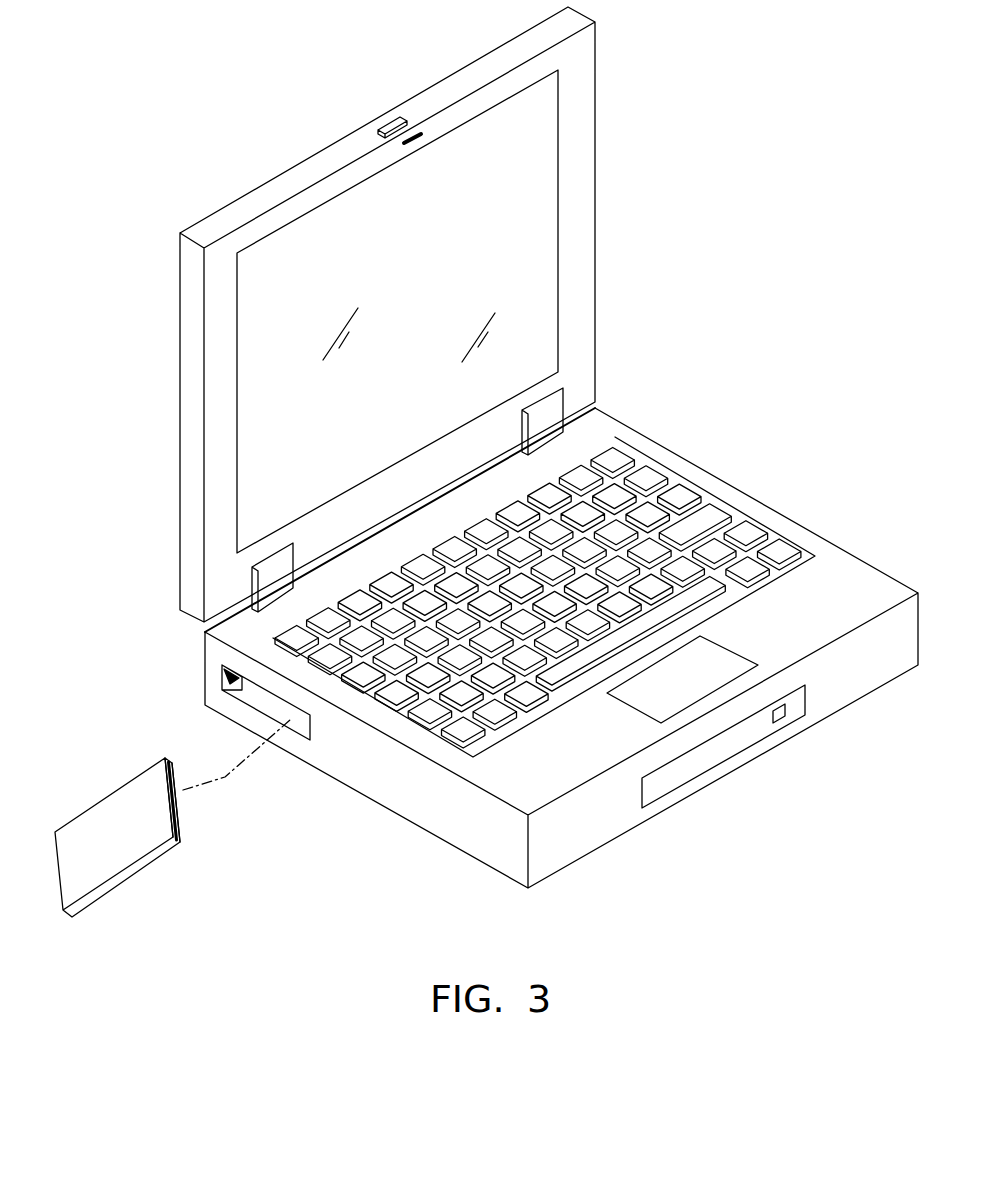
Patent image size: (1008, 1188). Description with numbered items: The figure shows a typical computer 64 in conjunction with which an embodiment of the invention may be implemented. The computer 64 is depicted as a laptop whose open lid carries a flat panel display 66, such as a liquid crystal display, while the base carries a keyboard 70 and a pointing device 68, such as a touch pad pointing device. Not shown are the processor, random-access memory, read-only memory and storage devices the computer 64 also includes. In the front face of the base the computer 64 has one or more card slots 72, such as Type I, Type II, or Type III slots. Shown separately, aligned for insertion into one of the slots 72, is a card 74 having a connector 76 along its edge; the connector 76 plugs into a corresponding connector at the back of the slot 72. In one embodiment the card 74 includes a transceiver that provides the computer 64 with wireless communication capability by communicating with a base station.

The computer 64 is at (518, 447).
The flat panel display 66 is at (253, 343).
The pointing device 68 is at (685, 687).
The keyboard 70 is at (647, 511).
The card slot 72 is at (228, 677).
The card 74 is at (118, 810).
The connector 76 is at (178, 824).